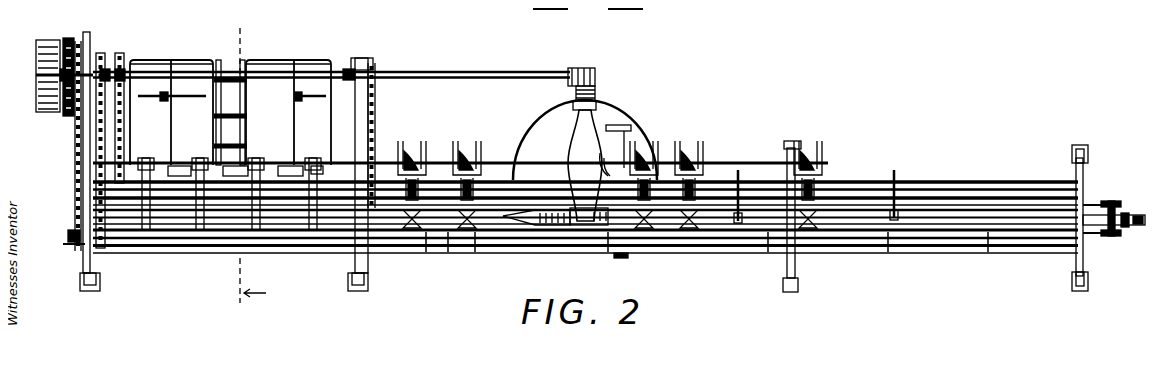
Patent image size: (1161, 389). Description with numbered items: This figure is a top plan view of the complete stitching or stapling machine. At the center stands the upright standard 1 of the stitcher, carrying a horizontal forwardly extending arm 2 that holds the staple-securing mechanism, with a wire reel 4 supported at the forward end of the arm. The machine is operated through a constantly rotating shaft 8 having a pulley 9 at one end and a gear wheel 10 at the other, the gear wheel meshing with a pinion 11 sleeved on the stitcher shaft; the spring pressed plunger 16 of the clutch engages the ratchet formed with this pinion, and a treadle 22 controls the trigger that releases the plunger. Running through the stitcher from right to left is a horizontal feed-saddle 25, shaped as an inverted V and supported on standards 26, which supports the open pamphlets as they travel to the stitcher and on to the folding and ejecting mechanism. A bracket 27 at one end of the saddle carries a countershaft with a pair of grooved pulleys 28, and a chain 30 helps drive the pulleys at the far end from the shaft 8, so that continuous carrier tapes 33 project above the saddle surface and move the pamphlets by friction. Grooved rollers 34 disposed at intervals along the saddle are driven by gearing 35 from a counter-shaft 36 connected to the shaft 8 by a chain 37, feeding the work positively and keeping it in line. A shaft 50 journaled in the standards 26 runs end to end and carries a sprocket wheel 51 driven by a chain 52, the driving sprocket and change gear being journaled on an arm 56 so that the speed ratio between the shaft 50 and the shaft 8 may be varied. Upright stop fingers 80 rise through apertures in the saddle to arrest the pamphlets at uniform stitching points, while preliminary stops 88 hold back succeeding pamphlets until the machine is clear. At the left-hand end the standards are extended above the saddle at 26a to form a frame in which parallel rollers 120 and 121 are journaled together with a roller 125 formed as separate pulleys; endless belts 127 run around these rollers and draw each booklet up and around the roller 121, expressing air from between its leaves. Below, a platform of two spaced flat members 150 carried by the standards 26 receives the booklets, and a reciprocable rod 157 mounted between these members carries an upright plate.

The upright standard 1 is at (556, 162).
The horizontal forwardly extending arm 2 is at (585, 162).
The wire reel 4 is at (536, 221).
The constantly rotating shaft 8 is at (425, 68).
The pulley 9 is at (40, 44).
The gear wheel 10 is at (574, 62).
The pinion 11 is at (588, 72).
The spring pressed plunger 16 is at (246, 168).
The treadle 22 is at (620, 248).
The horizontal feed-saddle 25 is at (935, 180).
The standards 26 is at (778, 257).
The standard extensions 26a is at (82, 127).
The bracket 27 is at (1128, 215).
The grooved pulleys 28 is at (1108, 196).
The chain 30 is at (112, 52).
The carrier-belts or tapes 33 is at (1085, 196).
The grooved rollers 34 is at (800, 226).
The gearing 35 is at (796, 150).
The counter-shaft 36 is at (712, 158).
The chain 37 is at (365, 108).
The shaft 50 is at (62, 228).
The sprocket wheel 51 is at (55, 236).
The chain 52 is at (70, 155).
The arm 56 is at (82, 45).
The upright fingers 80 is at (498, 222).
The preliminary stops 88 is at (732, 214).
The roller 120 is at (158, 210).
The roller 121 is at (212, 205).
The roller 125 is at (312, 152).
The endless belts 127 is at (303, 222).
The flat members 150 is at (170, 58).
The reciprocable rod 157 is at (222, 88).